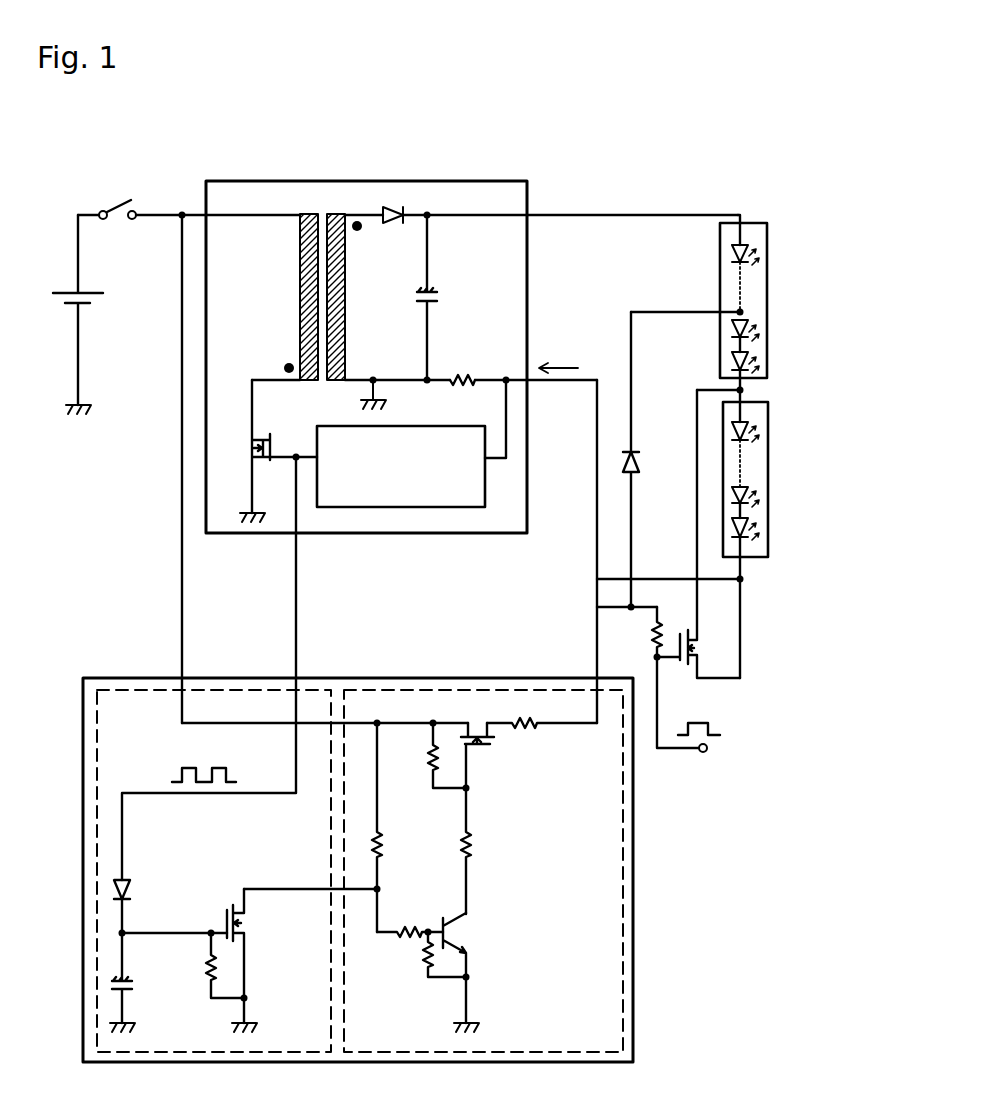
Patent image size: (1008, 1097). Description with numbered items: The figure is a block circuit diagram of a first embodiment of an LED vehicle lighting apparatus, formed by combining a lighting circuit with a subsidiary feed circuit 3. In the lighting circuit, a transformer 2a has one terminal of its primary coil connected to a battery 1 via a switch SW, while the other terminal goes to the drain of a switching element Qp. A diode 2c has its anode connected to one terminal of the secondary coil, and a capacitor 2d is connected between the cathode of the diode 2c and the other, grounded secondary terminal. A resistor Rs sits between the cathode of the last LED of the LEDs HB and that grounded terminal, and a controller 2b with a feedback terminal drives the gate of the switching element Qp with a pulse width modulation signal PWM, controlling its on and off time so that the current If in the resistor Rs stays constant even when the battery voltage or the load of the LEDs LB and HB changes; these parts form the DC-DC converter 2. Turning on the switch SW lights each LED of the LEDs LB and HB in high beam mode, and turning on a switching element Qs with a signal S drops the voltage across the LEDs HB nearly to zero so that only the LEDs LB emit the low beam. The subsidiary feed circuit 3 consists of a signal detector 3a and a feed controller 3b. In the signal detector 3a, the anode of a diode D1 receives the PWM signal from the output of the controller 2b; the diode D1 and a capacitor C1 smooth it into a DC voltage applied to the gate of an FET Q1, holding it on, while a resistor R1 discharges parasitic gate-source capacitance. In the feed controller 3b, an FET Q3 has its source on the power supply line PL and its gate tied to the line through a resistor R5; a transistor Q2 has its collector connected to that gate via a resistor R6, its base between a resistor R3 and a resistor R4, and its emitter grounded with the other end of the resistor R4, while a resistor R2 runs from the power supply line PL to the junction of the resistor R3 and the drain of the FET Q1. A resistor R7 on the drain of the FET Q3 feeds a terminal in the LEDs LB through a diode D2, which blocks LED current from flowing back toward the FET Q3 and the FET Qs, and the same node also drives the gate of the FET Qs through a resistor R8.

The battery 1 is at (67, 290).
The DC-DC converter 2 is at (365, 181).
The transformer 2a is at (300, 303).
The controller 2b is at (324, 426).
The diode 2c is at (395, 230).
The capacitor 2d is at (443, 298).
The subsidiary feed circuit 3 is at (393, 678).
The signal detector 3a is at (97, 868).
The feed controller 3b is at (623, 862).
The power supply line PL is at (157, 213).
The switch SW is at (130, 223).
The LEDs for low beam LB is at (744, 222).
The LEDs for high beam HB is at (757, 558).
The element LED is at (746, 372).
The diode D1 is at (141, 908).
The diode D2 is at (637, 461).
The capacitor C1 is at (139, 982).
The resistor R1 is at (185, 966).
The resistor R2 is at (393, 827).
The resistor R3 is at (410, 916).
The resistor R4 is at (439, 971).
The resistor R5 is at (428, 757).
The resistor R6 is at (487, 851).
The resistor R7 is at (542, 740).
The resistor R8 is at (641, 634).
The resistor Rs is at (523, 366).
The FET Q1 is at (256, 960).
The transistor Q2 is at (471, 972).
The FET Q3 is at (476, 740).
The switching element Qp is at (264, 451).
The switching element Qs is at (698, 534).
The signal S is at (688, 704).
The current If is at (558, 355).
The pulse width modulation signal PWM is at (209, 668).